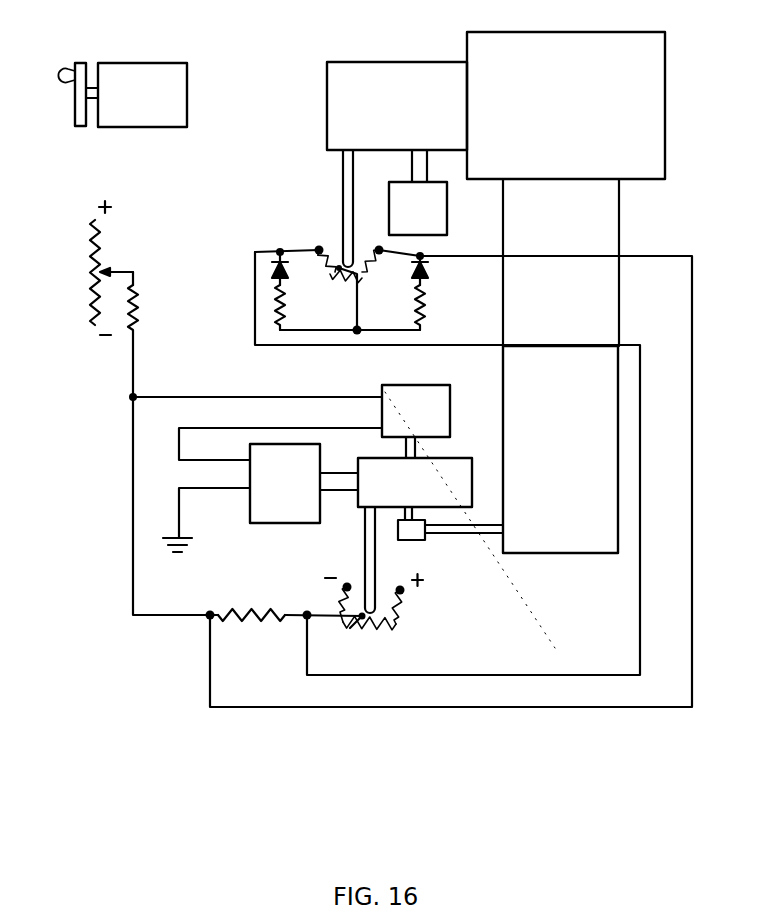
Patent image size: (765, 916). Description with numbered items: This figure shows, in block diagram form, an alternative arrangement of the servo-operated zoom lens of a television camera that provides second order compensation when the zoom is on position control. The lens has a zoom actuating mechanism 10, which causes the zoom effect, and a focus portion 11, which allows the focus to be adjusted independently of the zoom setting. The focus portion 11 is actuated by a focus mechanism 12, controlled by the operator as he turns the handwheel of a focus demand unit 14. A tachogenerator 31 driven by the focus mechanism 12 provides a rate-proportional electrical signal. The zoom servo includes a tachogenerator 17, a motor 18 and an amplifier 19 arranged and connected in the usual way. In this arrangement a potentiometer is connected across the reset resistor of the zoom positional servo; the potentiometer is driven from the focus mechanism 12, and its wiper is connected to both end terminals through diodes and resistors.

The zoom actuating mechanism 10 is at (560, 449).
The focus portion 11 is at (566, 105).
The focus mechanism 12 is at (397, 106).
The focus demand unit 14 is at (122, 95).
The tachogenerator 17 is at (416, 411).
The motor 18 is at (415, 482).
The amplifier 19 is at (285, 483).
The tachogenerator 31 is at (418, 208).